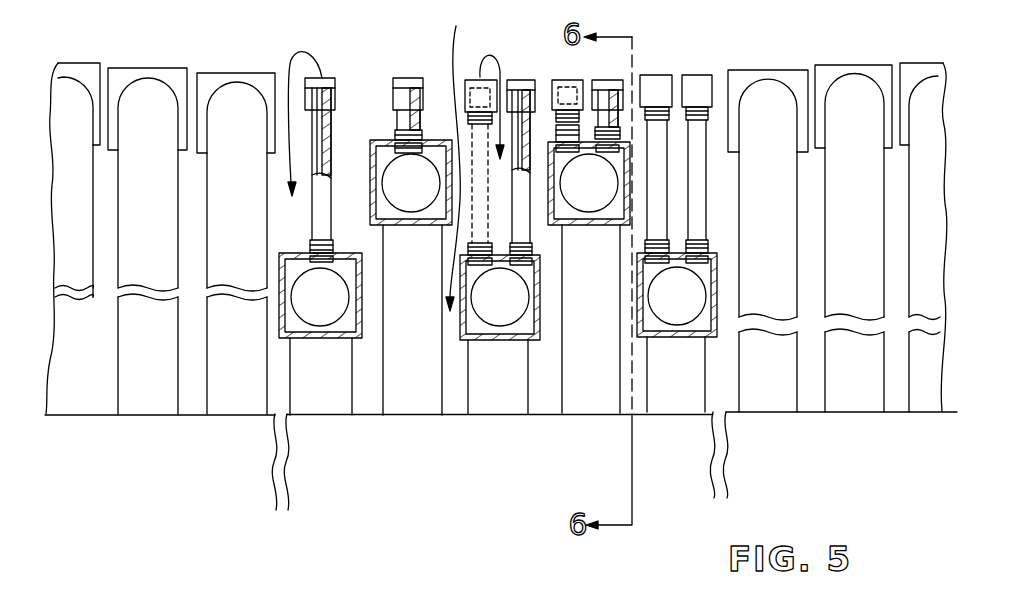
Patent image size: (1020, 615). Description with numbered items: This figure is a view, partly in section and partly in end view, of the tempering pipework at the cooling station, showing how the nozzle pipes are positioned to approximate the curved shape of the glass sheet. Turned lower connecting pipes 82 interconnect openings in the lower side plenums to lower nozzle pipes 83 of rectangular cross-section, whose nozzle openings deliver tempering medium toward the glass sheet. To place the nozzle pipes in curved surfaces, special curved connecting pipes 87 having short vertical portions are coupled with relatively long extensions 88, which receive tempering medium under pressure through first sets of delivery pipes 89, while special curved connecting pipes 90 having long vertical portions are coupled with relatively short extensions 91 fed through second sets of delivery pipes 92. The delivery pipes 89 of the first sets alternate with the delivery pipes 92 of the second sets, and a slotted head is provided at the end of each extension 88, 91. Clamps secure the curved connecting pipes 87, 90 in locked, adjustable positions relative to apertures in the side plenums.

The lower connecting pipes 82 is at (770, 413).
The lower nozzle pipes 83 is at (200, 73).
The curved connecting pipes having short vertical portions 87 is at (311, 416).
The relatively long extensions 88 is at (333, 125).
The delivery pipes of the first sets 89 is at (349, 253).
The curved connecting pipes having long vertical portions 90 is at (412, 415).
The relatively short extensions 91 is at (396, 131).
The delivery pipes of the second sets 92 is at (393, 226).